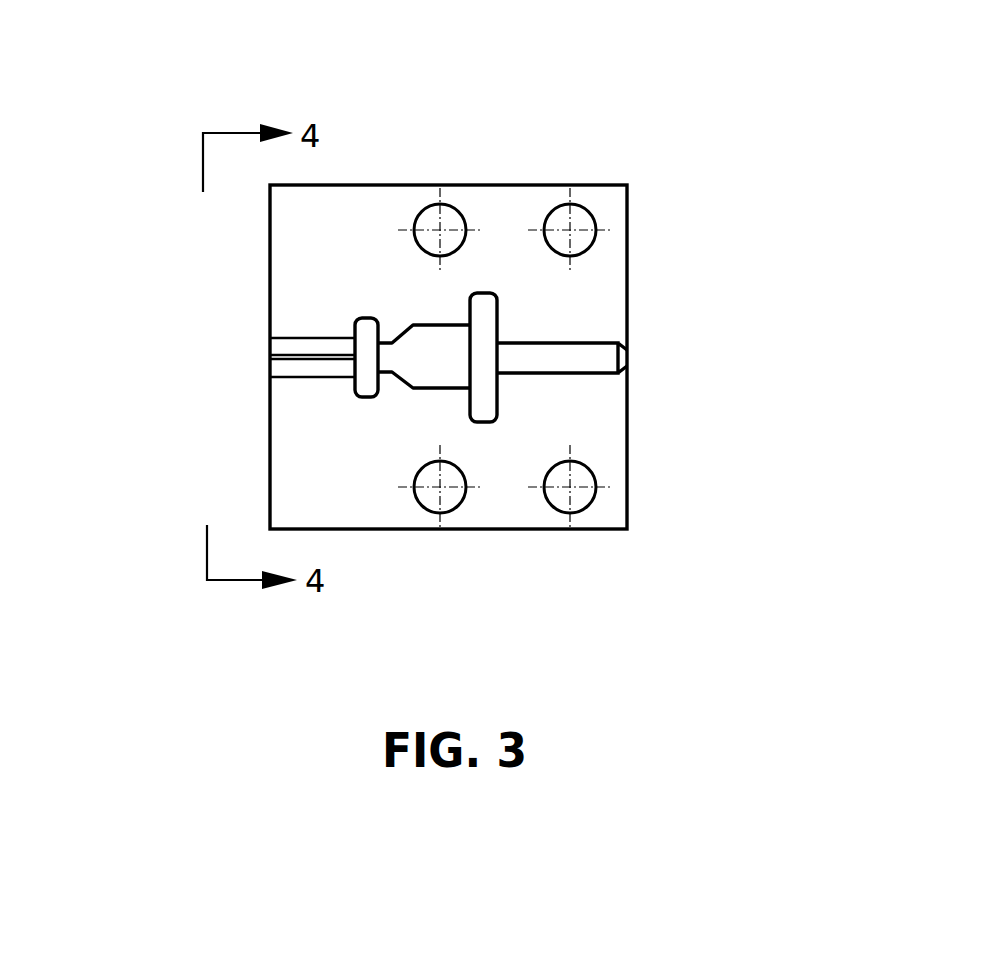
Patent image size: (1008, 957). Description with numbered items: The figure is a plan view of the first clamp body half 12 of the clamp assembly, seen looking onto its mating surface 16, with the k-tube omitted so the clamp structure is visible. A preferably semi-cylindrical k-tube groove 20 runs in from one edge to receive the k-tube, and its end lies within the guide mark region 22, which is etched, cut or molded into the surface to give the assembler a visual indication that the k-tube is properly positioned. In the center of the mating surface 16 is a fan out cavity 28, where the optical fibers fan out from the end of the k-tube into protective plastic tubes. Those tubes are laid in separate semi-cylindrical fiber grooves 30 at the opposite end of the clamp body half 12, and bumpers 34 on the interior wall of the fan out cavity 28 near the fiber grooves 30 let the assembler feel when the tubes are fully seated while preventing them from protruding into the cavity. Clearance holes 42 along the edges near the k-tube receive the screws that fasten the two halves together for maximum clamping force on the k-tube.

The clamp body half 12 is at (459, 296).
The mating surface 16 is at (322, 231).
The clearance holes 42 is at (587, 212).
The fiber grooves 30 is at (282, 377).
The bumpers 34 is at (355, 318).
The fan out cavity 28 is at (437, 389).
The guide mark region 22 is at (498, 306).
The k-tube groove 20 is at (580, 374).